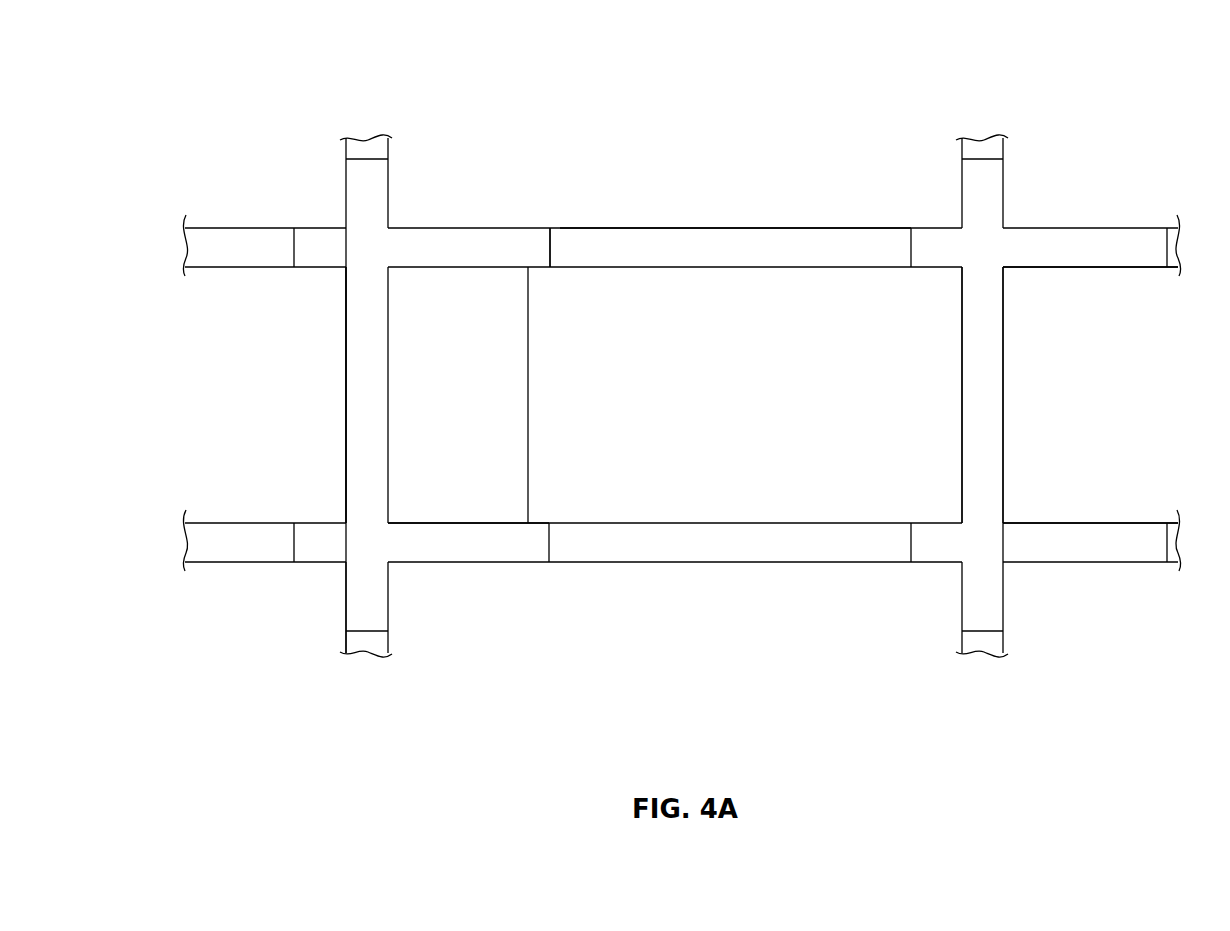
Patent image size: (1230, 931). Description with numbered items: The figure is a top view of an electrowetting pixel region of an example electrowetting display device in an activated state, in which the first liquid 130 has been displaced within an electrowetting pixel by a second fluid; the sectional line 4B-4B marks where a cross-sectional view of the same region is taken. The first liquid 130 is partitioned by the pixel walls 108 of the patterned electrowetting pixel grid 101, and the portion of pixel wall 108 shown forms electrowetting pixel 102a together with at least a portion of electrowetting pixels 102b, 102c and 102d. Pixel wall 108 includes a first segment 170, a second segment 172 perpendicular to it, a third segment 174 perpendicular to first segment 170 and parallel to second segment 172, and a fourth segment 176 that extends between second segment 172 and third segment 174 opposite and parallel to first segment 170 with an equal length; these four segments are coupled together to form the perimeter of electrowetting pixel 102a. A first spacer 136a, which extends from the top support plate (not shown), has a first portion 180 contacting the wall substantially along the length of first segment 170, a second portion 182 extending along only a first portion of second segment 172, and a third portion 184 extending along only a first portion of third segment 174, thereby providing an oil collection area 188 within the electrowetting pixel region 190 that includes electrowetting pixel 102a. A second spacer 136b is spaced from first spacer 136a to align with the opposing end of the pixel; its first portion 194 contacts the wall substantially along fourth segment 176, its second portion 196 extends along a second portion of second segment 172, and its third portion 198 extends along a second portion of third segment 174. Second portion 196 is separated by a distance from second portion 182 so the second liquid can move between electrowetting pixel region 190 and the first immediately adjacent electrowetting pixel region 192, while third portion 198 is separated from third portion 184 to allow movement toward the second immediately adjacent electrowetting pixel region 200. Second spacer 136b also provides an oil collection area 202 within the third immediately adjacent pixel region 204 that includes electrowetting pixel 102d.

The patterned electrowetting pixel grid 101 is at (914, 52).
The pixel wall 108 is at (266, 214).
The electrowetting pixel 102a is at (697, 412).
The electrowetting pixel 102b is at (626, 129).
The electrowetting pixel 102c is at (750, 689).
The electrowetting pixel 102d is at (1173, 432).
The first liquid 130 is at (458, 395).
The first spacer 136a is at (452, 212).
The second spacer 136b is at (1062, 201).
The first segment 170 is at (349, 418).
The second segment 172 is at (694, 246).
The third segment 174 is at (672, 551).
The fourth segment 176 is at (960, 360).
The first portion 180 is at (368, 320).
The second portion 182 is at (489, 253).
The third portion 184 is at (472, 551).
The oil collection area 188 is at (506, 412).
The electrowetting pixel region 190 is at (745, 308).
The first immediately adjacent electrowetting pixel region 192 is at (735, 146).
The first portion 194 is at (990, 385).
The second portion 196 is at (1141, 259).
The third portion 198 is at (1134, 530).
The second immediately adjacent electrowetting pixel region 200 is at (548, 722).
The oil collection area 202 is at (1062, 506).
The third immediately adjacent pixel region 204 is at (1125, 367).
The sectional line 4B- 4B is at (560, 670).